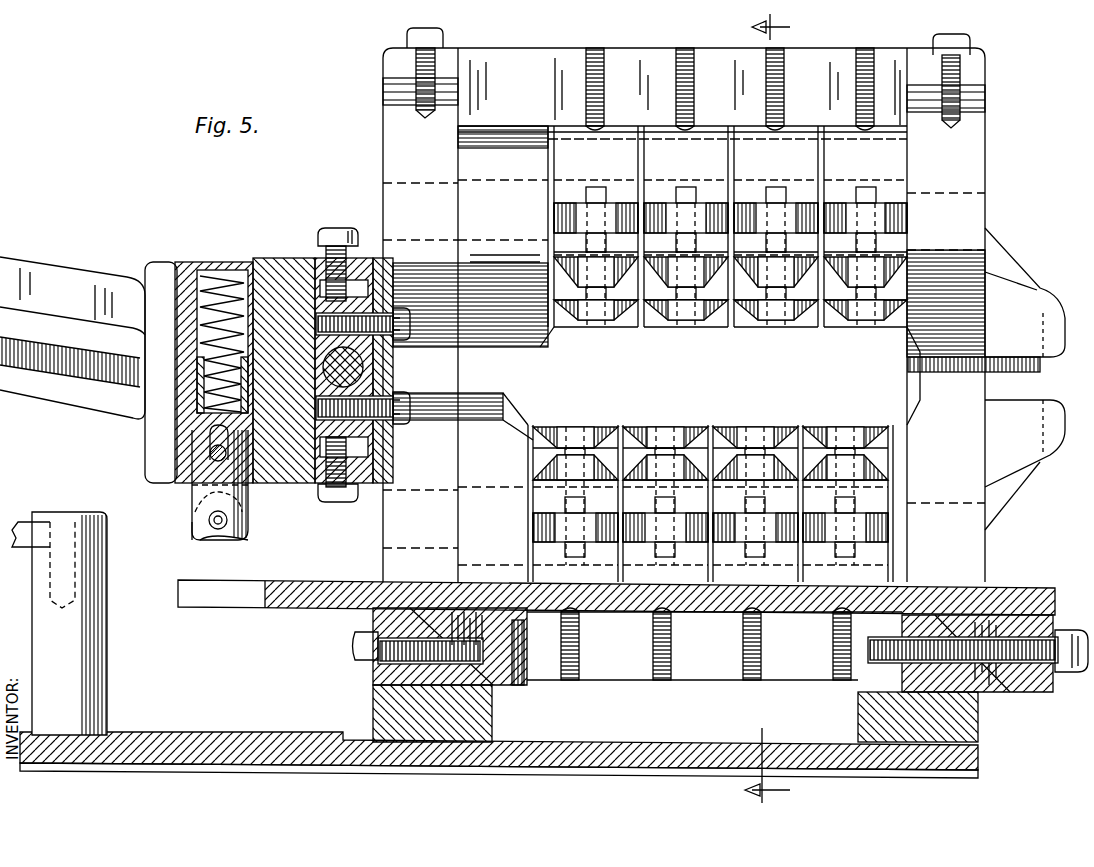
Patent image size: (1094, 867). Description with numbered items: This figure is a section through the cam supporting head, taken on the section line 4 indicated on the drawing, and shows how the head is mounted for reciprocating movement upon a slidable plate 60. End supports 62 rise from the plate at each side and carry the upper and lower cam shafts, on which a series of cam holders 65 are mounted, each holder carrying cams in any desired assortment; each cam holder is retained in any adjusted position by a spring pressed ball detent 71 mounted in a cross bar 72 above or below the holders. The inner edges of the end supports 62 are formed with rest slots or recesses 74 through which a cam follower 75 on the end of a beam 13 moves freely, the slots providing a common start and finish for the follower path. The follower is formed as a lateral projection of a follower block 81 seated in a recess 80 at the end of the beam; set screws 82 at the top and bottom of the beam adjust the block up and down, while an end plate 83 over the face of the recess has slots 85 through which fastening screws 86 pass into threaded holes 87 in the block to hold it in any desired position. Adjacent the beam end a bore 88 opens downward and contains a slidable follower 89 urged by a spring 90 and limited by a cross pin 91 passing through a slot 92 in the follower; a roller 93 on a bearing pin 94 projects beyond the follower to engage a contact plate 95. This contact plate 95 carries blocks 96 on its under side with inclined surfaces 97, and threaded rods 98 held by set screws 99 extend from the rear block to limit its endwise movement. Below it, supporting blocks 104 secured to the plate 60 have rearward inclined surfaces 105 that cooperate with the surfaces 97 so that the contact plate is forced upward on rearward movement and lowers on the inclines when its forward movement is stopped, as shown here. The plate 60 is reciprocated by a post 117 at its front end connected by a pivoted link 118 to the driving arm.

The section line 4- 4 is at (775, 409).
The beam 13 is at (38, 292).
The plate 60 is at (205, 740).
The end supports 62 is at (395, 110).
The cam holders 65 is at (662, 146).
The spring pressed ball detent 71 is at (857, 128).
The cross bar 72 is at (810, 70).
The slots or recesses 74 is at (452, 347).
The cam follower 75 is at (347, 380).
The recess 80 is at (318, 305).
The follower block 81 is at (316, 455).
The set screws 82 is at (338, 240).
The end plate 83 is at (388, 268).
The slots 85 is at (396, 332).
The fastening screws 86 is at (325, 318).
The holes 87 is at (316, 328).
The bore 88 is at (162, 300).
The slidable follower 89 is at (203, 478).
The spring 90 is at (182, 352).
The cross pin 91 is at (212, 456).
The slot 92 is at (210, 438).
The roller 93 is at (228, 545).
The bearing pin 94 is at (195, 535).
The contact plate 95 is at (288, 608).
The blocks 96 is at (528, 665).
The inclined surfaces 97 is at (462, 622).
The threaded rods 98 is at (1078, 672).
The set screws 99 is at (1064, 632).
The supporting blocks 104 is at (375, 670).
The inclined surface 105 is at (490, 695).
The post 117 is at (92, 660).
The link 118 is at (22, 522).